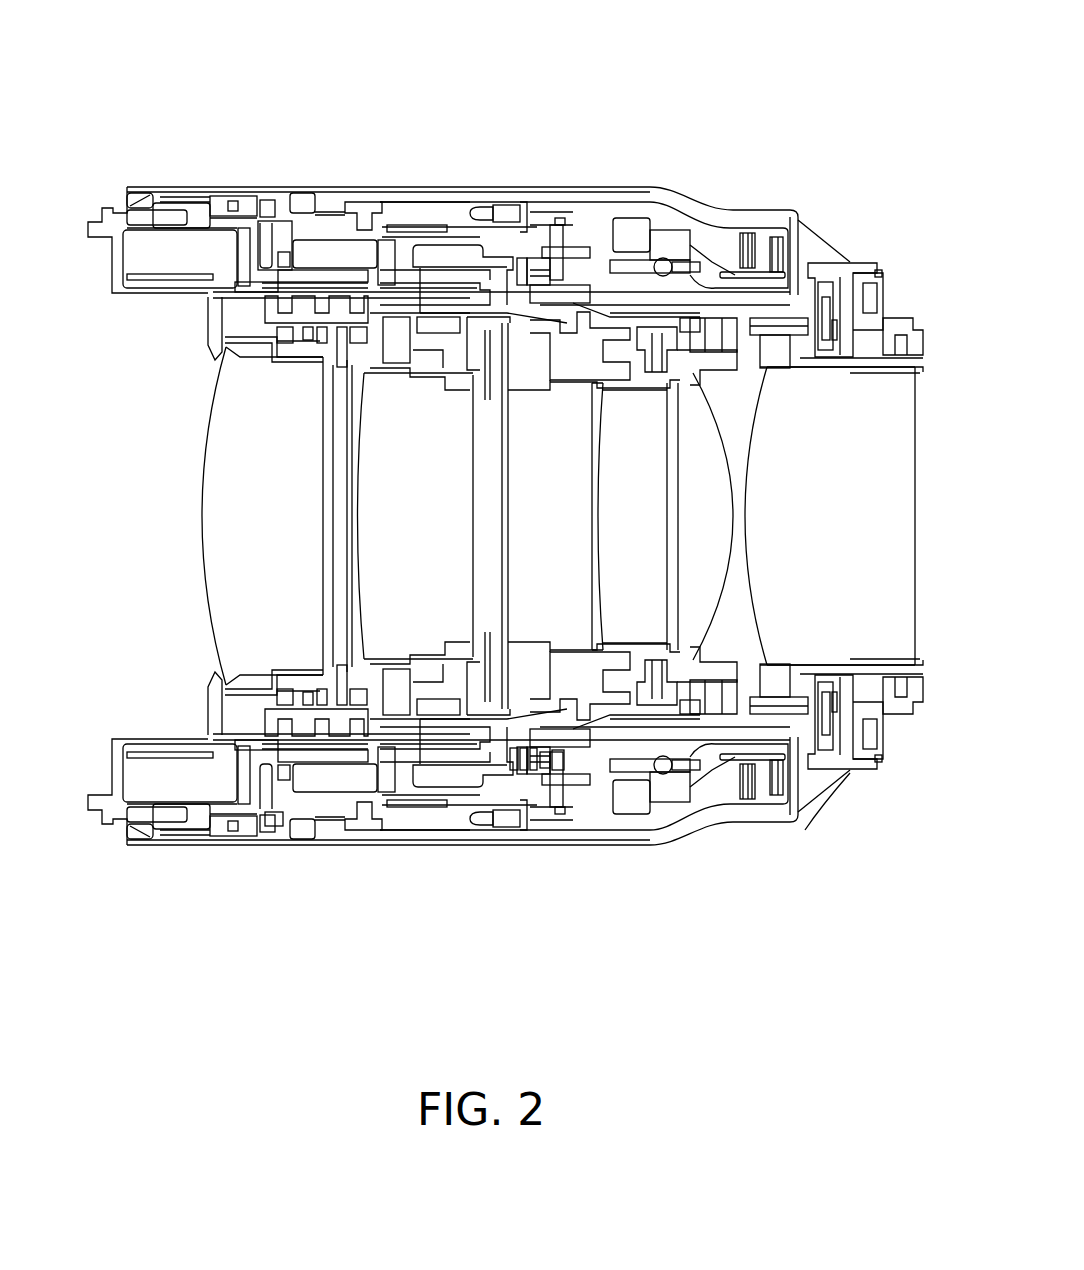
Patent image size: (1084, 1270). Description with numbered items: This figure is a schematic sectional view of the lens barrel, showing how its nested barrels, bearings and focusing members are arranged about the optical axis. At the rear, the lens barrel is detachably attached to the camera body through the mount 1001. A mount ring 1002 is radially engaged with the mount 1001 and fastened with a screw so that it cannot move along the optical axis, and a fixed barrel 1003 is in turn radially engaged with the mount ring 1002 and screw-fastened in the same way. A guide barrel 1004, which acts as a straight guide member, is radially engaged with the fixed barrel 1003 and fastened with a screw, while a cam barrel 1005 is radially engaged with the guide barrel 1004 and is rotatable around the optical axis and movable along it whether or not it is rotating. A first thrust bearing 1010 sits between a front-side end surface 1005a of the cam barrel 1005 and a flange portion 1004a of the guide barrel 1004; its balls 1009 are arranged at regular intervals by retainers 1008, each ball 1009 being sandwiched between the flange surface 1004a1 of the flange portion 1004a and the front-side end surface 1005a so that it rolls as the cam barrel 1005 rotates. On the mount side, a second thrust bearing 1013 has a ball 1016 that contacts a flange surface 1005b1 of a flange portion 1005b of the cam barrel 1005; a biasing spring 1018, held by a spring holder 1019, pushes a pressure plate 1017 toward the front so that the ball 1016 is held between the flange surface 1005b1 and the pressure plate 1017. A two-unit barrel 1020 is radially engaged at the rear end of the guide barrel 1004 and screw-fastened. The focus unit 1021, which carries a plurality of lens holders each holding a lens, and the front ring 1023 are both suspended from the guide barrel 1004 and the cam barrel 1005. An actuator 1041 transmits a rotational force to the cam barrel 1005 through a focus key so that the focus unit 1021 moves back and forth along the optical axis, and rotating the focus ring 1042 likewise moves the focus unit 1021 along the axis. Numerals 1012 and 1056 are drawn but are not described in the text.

The mount 1001 is at (875, 307).
The mount ring 1002 is at (847, 267).
The fixed barrel 1003 is at (812, 243).
The guide barrel 1004 is at (617, 300).
The flange portion 1004a is at (252, 248).
The flange surface 1004a1 is at (275, 815).
The cam barrel 1005 is at (442, 248).
The front-side end surface 1005a is at (290, 250).
The flange portion 1005b is at (517, 758).
The flange surface 1005b1 is at (522, 760).
The retainer 1008 is at (283, 255).
The ball 1009 is at (282, 253).
The first thrust bearing 1010 is at (327, 65).
The first lens holding frame 1012 is at (307, 265).
The second thrust bearing 1013 is at (523, 258).
The ball 1016 is at (528, 762).
The pressure plate 1017 is at (538, 758).
The biasing spring 1018 is at (557, 273).
The spring holder 1019 is at (580, 282).
The two-unit barrel 1020 is at (805, 673).
The focus unit 1021 is at (153, 402).
The front ring 1023 is at (352, 727).
The actuator 1041 is at (720, 247).
The focus ring 1042 is at (407, 203).
The biasing spring 1056 is at (550, 758).